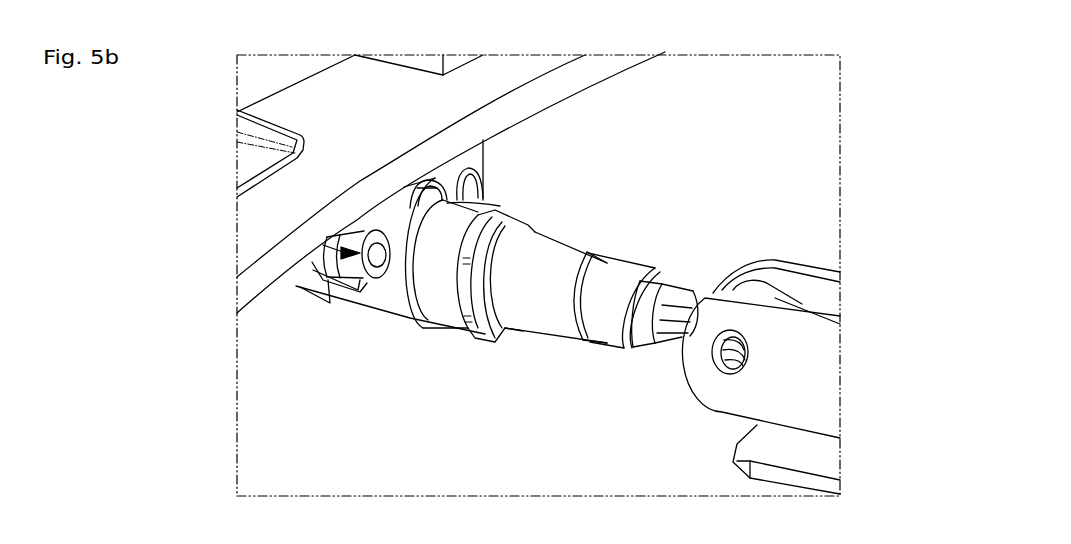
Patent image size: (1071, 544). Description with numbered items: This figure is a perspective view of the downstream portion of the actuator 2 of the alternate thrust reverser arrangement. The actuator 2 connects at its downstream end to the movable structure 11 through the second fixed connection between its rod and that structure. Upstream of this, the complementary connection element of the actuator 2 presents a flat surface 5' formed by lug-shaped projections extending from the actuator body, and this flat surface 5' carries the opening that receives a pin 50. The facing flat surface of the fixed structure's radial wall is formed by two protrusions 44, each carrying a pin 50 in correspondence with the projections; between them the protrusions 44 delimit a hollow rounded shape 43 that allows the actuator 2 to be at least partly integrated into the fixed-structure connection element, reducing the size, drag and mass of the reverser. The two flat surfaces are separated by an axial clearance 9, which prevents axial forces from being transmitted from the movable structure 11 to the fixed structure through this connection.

The actuator 2 is at (768, 206).
The flat surface 5' is at (340, 289).
The axial clearance 9 is at (306, 243).
The movable structure 11 is at (805, 390).
The hollow rounded shape 43 is at (447, 200).
The protrusions 44 is at (406, 300).
The pin 50 is at (485, 193).